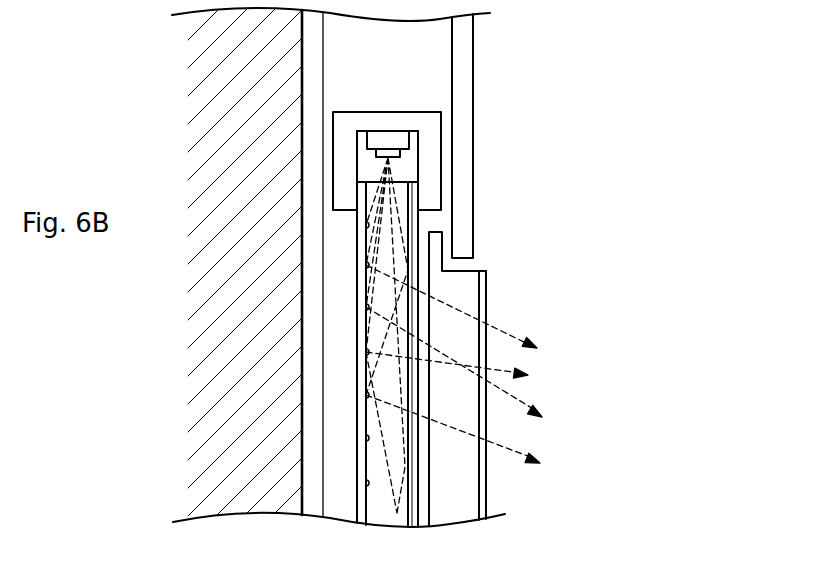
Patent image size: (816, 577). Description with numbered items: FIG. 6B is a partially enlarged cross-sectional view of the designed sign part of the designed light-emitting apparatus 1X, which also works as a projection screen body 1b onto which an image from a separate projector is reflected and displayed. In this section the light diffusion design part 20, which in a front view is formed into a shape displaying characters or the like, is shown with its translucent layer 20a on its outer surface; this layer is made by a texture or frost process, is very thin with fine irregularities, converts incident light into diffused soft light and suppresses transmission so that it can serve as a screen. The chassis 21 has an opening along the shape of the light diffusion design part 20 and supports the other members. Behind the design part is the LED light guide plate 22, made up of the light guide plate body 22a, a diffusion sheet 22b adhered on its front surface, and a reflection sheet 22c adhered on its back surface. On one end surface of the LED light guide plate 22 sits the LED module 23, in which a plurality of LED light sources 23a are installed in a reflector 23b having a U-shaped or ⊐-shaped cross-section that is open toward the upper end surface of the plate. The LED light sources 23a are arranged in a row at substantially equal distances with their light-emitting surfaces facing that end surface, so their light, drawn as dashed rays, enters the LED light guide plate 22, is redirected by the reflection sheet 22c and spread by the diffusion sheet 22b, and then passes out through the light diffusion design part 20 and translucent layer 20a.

The designed light-emitting apparatus 1X is at (705, 98).
The projection screen body 1b is at (654, 0).
The light diffusion design part 20 is at (469, 292).
The translucent layer 20a is at (486, 327).
The chassis 21 is at (463, 52).
The LED light guide plate 22 is at (578, 382).
The light guide plate body 22a is at (397, 483).
The diffusion sheet 22b is at (415, 448).
The reflection sheet 22c is at (365, 422).
The LED module 23 is at (587, 85).
The LED light sources 23a is at (387, 150).
The reflector 23b is at (433, 123).